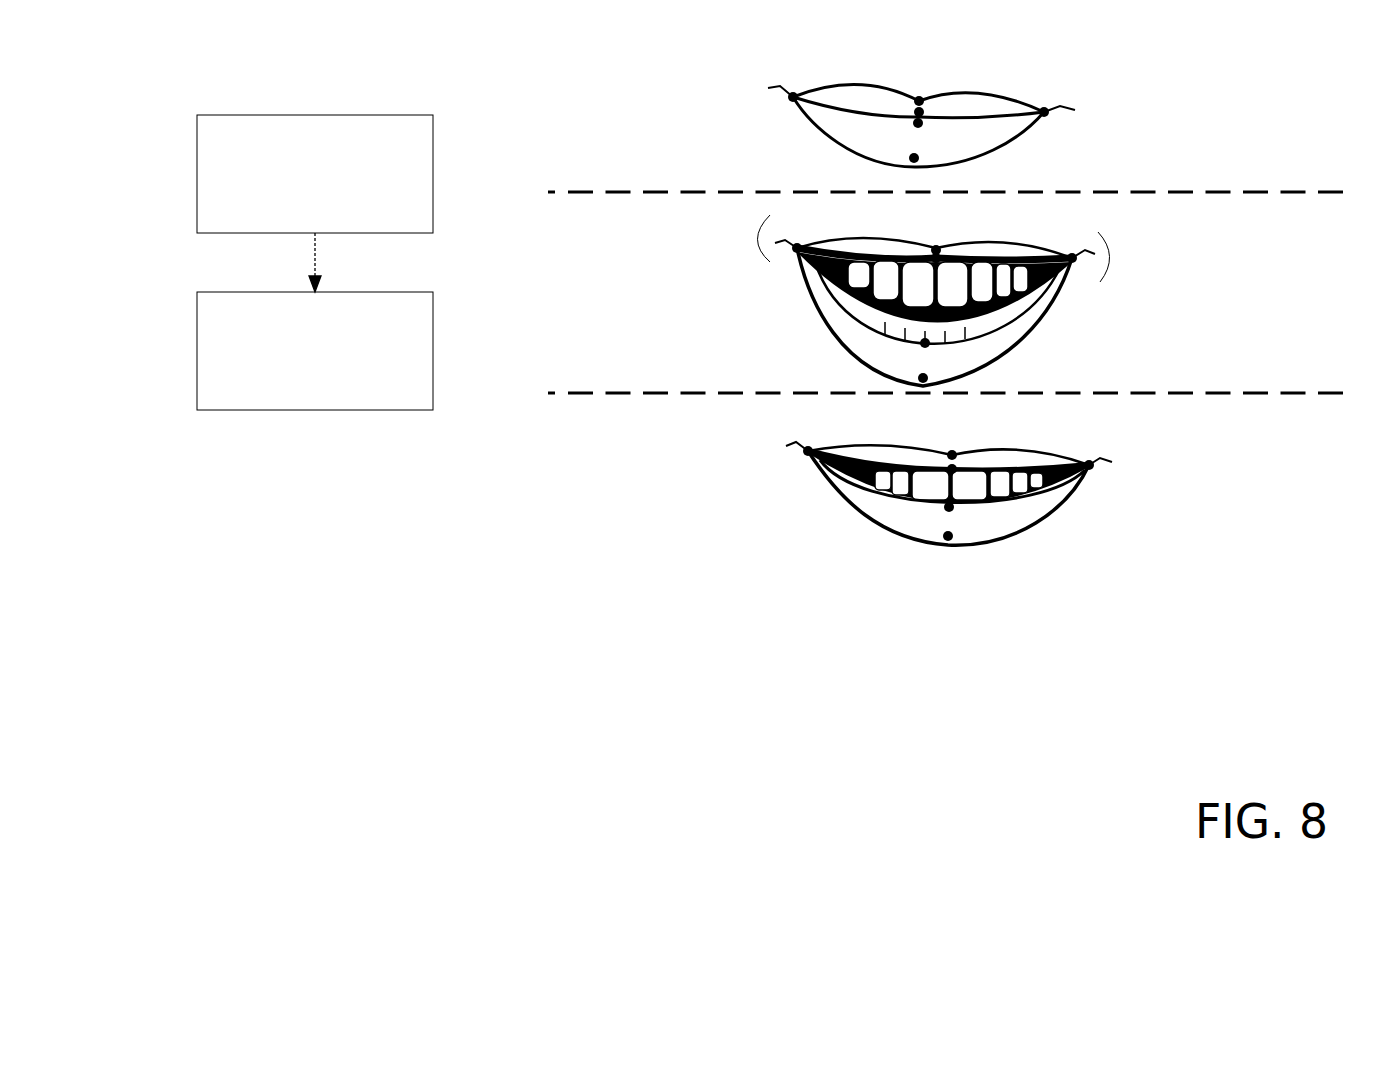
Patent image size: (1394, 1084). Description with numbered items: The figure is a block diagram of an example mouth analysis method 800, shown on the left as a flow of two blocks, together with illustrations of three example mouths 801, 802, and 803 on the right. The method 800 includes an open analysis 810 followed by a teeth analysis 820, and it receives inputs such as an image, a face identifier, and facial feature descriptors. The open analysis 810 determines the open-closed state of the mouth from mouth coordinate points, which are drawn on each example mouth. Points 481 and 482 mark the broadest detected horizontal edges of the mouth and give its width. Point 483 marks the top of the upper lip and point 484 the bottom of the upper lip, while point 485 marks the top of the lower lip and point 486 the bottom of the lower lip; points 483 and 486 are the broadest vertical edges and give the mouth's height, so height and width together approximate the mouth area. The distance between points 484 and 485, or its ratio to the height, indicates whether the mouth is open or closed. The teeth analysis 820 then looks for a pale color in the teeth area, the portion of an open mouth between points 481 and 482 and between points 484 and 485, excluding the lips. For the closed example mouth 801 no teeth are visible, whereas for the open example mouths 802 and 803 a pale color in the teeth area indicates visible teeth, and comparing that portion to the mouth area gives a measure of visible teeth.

The mouth analysis method 800 is at (339, 716).
The open analysis 810 is at (197, 172).
The teeth analysis 820 is at (197, 350).
The example mouth 801 is at (1306, 121).
The example mouth 802 is at (1306, 316).
The example mouth 803 is at (1306, 512).
The mouth coordinate point 481 is at (1044, 112).
The mouth coordinate point 482 is at (793, 97).
The mouth coordinate point 483 is at (919, 101).
The mouth coordinate point 484 is at (919, 112).
The mouth coordinate point 485 is at (918, 123).
The mouth coordinate point 486 is at (914, 158).